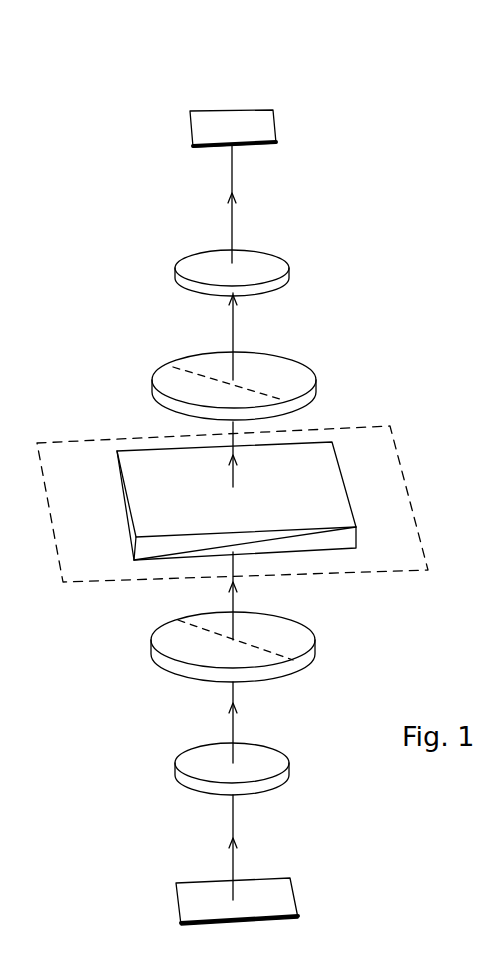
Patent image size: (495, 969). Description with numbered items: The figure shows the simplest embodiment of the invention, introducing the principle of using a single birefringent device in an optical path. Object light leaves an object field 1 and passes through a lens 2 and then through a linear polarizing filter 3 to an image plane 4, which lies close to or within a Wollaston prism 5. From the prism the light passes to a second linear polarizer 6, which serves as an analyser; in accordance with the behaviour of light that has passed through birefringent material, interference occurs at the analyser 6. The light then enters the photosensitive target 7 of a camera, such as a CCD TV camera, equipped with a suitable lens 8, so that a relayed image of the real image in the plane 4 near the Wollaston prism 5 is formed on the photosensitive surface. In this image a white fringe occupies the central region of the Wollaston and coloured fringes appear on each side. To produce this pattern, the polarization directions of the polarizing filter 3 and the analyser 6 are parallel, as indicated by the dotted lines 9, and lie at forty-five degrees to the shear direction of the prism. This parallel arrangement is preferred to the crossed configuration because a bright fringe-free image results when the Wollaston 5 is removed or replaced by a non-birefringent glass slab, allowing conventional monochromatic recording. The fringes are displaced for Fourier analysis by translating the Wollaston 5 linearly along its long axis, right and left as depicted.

The object field 1 is at (285, 897).
The lens 2 is at (290, 768).
The linear polarizing filter 3 is at (316, 650).
The image plane 4 is at (417, 518).
The Wollaston prism 5 is at (346, 496).
The second linear polarizer 6 is at (317, 390).
The photosensitive target 7 is at (278, 125).
The lens 8 is at (291, 270).
The polarization directions 9 is at (190, 370).